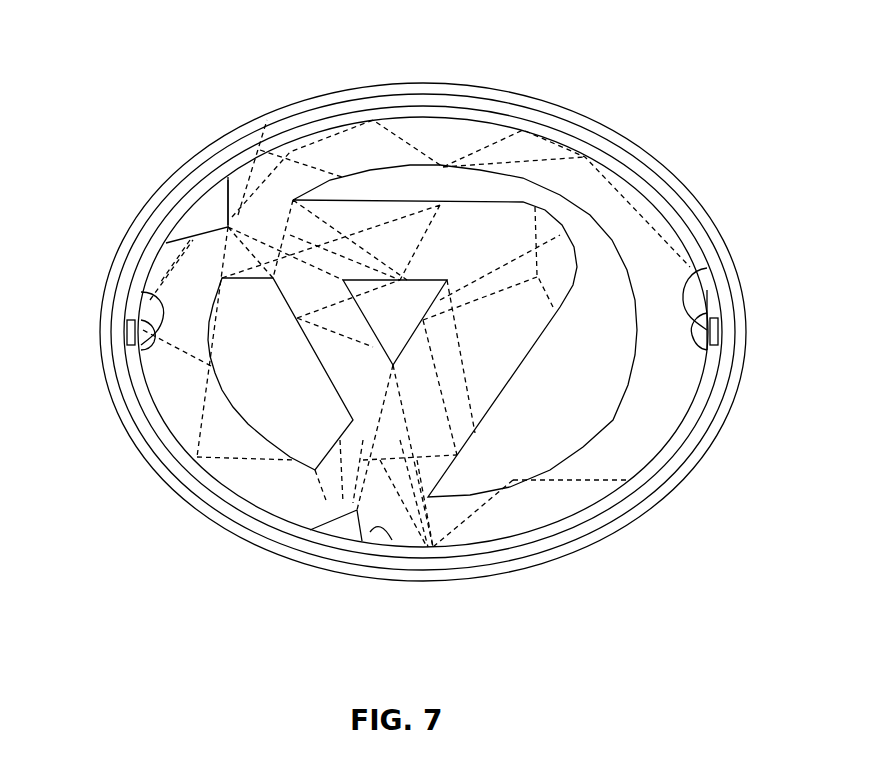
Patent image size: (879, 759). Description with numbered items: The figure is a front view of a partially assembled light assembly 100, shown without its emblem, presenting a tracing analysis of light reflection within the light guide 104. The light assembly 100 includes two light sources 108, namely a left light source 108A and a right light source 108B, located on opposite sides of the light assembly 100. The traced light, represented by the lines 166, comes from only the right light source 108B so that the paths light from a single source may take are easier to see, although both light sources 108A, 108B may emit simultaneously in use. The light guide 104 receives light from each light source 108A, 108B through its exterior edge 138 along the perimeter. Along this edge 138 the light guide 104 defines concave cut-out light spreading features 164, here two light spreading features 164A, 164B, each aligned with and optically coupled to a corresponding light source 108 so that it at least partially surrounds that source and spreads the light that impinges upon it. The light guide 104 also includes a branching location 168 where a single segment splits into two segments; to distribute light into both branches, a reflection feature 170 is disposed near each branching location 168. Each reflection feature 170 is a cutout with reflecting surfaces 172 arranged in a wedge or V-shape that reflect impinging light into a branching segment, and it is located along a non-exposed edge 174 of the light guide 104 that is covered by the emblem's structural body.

The light assembly 100 is at (645, 86).
The light guide 104 is at (510, 517).
The light sources 108 is at (720, 338).
The left light source 108A is at (718, 331).
The right light source 108B is at (130, 330).
The exterior edge 138 is at (143, 377).
The light spreading feature 164 is at (683, 300).
The first light spreading feature 164A is at (700, 302).
The second light spreading feature 164B is at (160, 297).
The lines 166 is at (200, 410).
The branching location 168 is at (240, 190).
The reflection feature 170 is at (206, 216).
The reflecting surfaces 172 is at (226, 190).
The non-exposed edge 174 is at (285, 147).